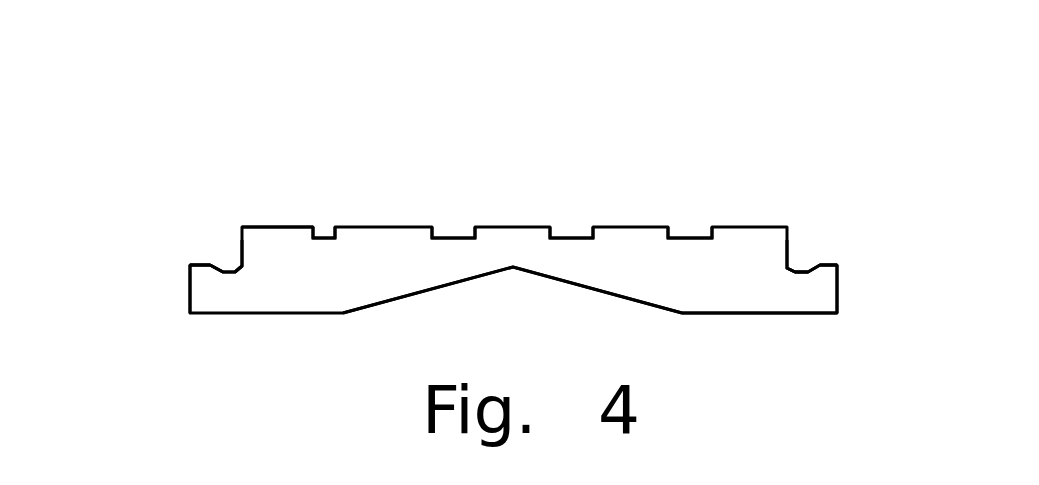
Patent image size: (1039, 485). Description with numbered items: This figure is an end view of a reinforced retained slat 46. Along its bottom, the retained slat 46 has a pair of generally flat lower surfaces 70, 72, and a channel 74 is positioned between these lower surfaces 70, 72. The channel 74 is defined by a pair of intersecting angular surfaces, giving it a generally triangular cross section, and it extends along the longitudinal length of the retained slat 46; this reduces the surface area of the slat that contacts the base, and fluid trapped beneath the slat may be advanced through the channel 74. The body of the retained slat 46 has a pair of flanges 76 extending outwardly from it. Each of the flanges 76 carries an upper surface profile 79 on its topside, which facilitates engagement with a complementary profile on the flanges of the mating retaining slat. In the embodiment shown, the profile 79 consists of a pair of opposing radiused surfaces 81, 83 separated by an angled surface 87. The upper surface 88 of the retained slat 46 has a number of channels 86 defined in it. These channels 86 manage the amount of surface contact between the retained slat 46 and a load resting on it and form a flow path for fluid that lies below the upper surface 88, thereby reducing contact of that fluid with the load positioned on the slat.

The retained slat 46 is at (915, 108).
The lower surface 70 is at (256, 318).
The lower surface 72 is at (752, 318).
The channel 74 is at (513, 277).
The flanges 76 is at (197, 290).
The upper surface profile 79 is at (197, 247).
The radiused surface 81 is at (232, 267).
The radiused surface 83 is at (195, 265).
The channels 86 is at (338, 238).
The angled surface 87 is at (213, 266).
The upper surface 88 is at (272, 226).